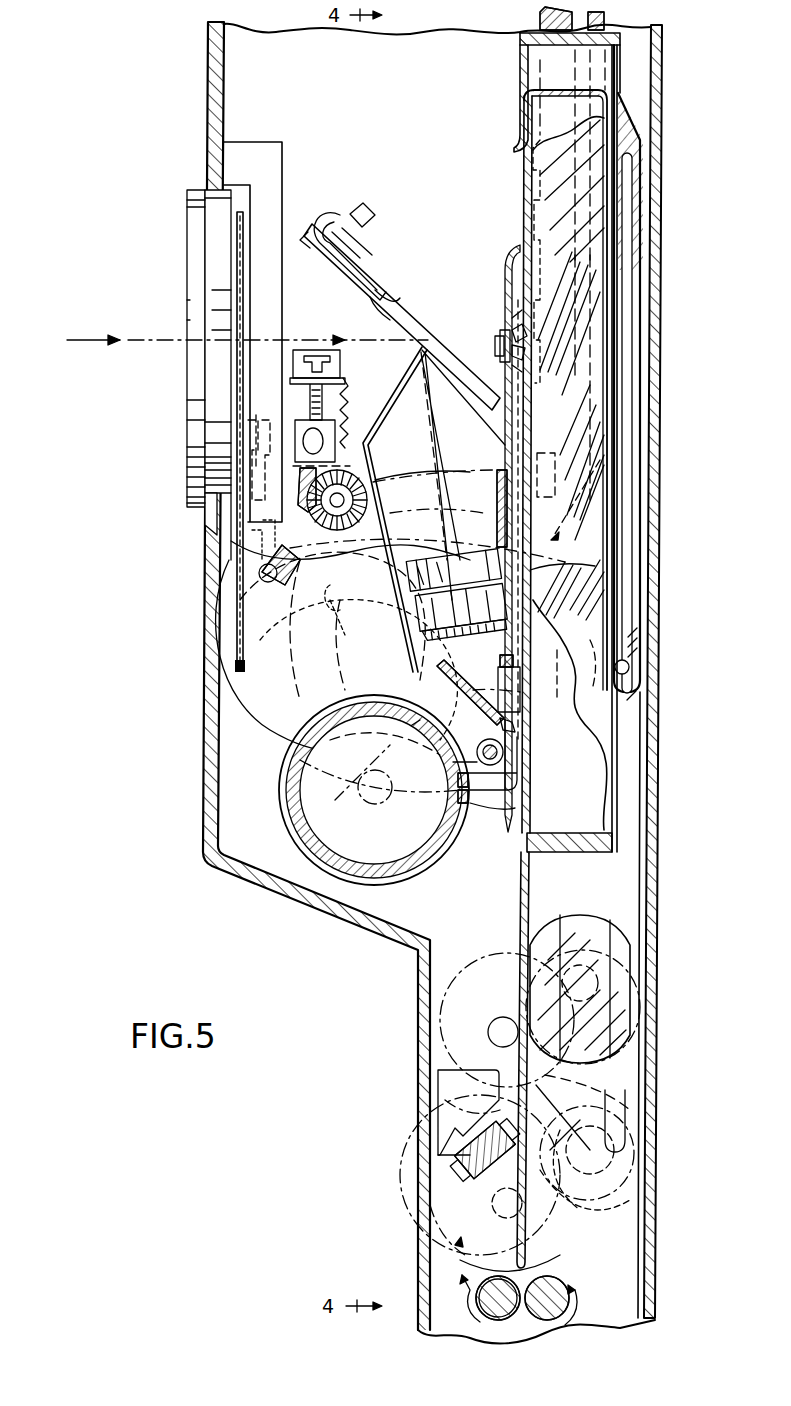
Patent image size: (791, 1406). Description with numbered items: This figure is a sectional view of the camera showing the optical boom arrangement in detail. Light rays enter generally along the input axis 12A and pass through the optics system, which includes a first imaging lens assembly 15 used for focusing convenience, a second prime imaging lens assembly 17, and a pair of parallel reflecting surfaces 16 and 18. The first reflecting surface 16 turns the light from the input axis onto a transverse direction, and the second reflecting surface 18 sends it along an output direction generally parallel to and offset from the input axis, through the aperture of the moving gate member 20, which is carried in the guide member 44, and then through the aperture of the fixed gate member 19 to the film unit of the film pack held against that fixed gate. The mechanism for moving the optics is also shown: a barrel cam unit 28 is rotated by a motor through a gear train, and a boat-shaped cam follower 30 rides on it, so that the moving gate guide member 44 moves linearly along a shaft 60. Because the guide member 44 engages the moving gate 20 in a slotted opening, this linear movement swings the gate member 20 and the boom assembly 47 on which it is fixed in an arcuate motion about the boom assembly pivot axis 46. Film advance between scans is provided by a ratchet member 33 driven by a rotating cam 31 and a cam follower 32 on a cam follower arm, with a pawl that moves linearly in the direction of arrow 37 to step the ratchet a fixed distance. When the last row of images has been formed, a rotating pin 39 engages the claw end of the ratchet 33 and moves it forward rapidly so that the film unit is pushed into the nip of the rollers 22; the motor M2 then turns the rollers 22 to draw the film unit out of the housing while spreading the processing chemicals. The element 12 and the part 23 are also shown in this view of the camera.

The eyepiece knob 12 is at (186, 319).
The input axis 12A is at (89, 340).
The first imaging lens assembly 15 is at (298, 154).
The reflecting surface 16 is at (396, 337).
The second prime imaging lens assembly 17 is at (424, 561).
The reflecting surface 18 is at (455, 695).
The fixed gate member 19 is at (556, 663).
The moving gate member 20 is at (497, 680).
The rollers 22 is at (455, 1284).
The adjusting rod 23 is at (237, 536).
The barrel cam unit 28 is at (280, 766).
The cam follower 30 is at (486, 804).
The rotating cam 31 is at (280, 712).
The cam follower 32 is at (270, 582).
The ratchet member 33 is at (651, 222).
The arrow 37 is at (590, 1212).
The rotating pin 39 is at (520, 1110).
The moving gate guide member 44 is at (513, 630).
The boom assembly pivot axis 46 is at (494, 344).
The boom assembly 47 is at (507, 448).
The shaft 60 is at (470, 762).
The motor M2 is at (568, 928).